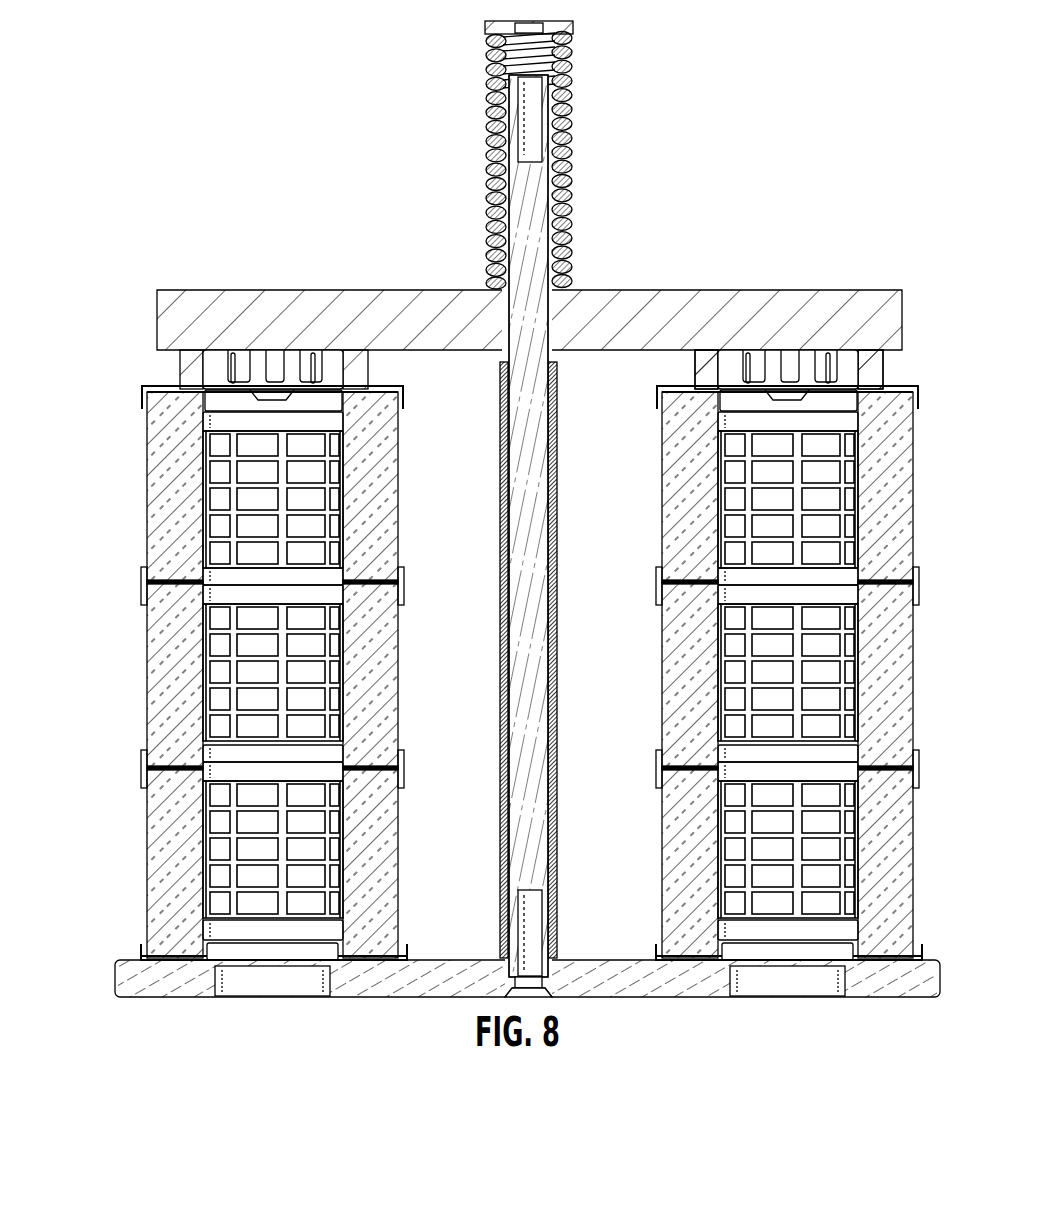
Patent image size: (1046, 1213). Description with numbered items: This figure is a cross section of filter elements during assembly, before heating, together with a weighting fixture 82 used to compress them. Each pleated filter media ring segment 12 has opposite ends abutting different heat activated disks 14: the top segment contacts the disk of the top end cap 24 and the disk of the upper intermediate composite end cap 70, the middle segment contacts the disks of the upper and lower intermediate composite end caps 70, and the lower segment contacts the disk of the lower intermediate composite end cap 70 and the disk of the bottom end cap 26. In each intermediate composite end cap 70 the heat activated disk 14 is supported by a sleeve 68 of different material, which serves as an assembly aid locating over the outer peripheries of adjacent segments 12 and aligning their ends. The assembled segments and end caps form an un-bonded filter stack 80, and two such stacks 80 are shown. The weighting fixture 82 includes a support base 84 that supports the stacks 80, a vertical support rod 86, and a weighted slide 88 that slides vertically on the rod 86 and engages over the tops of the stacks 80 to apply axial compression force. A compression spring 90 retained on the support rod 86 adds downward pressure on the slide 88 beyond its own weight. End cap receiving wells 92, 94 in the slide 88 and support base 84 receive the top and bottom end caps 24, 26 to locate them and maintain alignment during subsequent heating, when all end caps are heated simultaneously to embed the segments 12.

The pleated filter media ring segment 12 is at (147, 507).
The heat activated disk 14 is at (175, 398).
The top end cap 24 is at (162, 384).
The bottom end cap 26 is at (160, 982).
The sleeve 68 is at (138, 596).
The intermediate composite end cap 70 is at (135, 580).
The un-bonded filter stack 80 is at (102, 466).
The weighting fixture 82 is at (820, 278).
The support base 84 is at (636, 976).
The vertical support rod 86 is at (525, 795).
The weighted slide 88 is at (642, 318).
The compression spring 90 is at (570, 118).
The end cap receiving well 92 is at (330, 366).
The end cap receiving well 94 is at (336, 968).